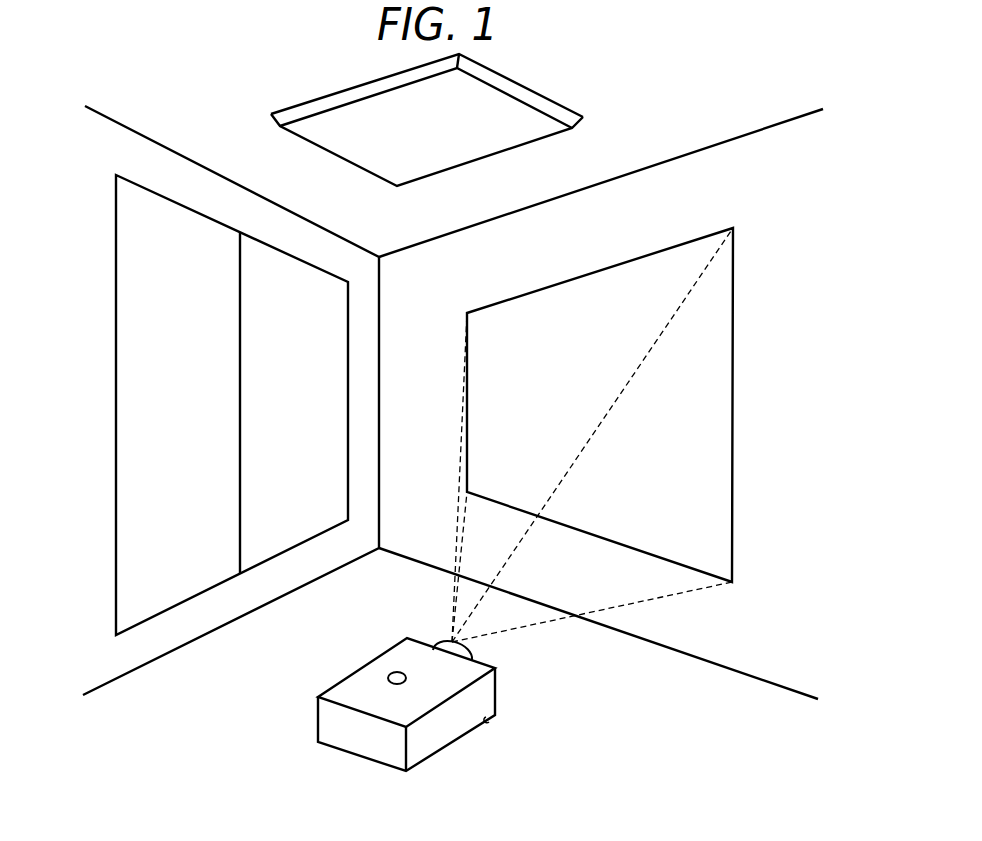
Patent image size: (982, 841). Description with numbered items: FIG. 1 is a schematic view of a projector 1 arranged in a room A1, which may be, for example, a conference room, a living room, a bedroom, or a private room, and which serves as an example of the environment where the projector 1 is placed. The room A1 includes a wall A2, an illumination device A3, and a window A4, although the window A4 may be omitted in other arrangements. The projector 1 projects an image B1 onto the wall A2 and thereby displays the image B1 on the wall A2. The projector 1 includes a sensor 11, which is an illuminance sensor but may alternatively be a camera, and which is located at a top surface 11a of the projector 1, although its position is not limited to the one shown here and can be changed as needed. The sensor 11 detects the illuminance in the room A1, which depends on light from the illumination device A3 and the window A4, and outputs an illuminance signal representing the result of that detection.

The projector 1 is at (375, 688).
The sensor 11 is at (393, 672).
The top surface 11a is at (347, 690).
The room A1 is at (648, 731).
The wall A2 is at (741, 253).
The illumination device A3 is at (523, 126).
The window A4 is at (135, 330).
The image B1 is at (708, 403).